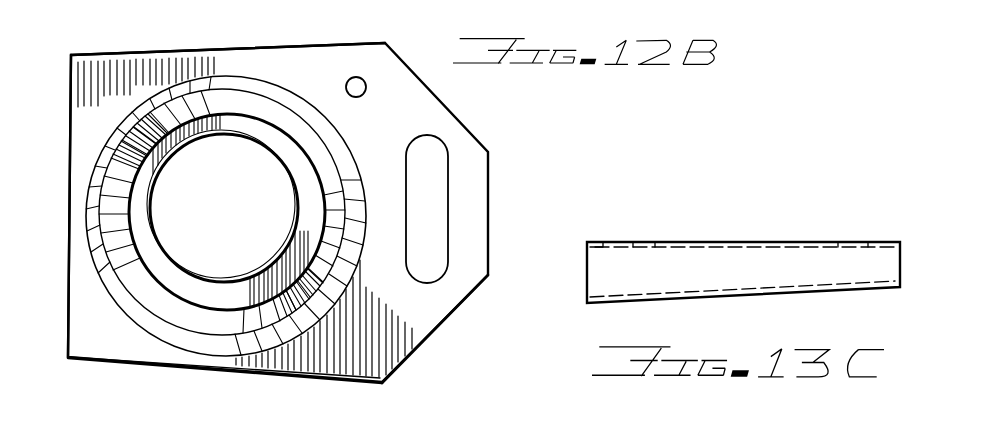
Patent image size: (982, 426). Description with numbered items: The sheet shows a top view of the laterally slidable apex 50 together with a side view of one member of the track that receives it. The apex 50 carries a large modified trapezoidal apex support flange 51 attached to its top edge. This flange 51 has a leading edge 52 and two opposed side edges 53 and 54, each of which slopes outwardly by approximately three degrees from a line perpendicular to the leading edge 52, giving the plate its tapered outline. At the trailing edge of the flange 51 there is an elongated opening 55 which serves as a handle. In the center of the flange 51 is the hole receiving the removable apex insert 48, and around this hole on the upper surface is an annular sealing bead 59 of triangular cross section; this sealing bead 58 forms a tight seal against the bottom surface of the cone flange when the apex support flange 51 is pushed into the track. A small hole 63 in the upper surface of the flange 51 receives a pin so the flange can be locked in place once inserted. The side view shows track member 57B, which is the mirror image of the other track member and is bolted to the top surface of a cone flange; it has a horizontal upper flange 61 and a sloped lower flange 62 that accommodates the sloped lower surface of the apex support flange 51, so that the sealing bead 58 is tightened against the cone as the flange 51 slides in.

In FIG. 12B, the laterally slidable apex 50 is at (158, 373).
In FIG. 12B, the apex support flange 51 is at (340, 354).
In FIG. 12B, the leading edge 52 is at (69, 230).
In FIG. 12B, the side edge 53 is at (196, 370).
In FIG. 12B, the side edge 54 is at (271, 47).
In FIG. 12B, the elongated opening 55 is at (427, 137).
In FIG. 12B, the hole 63 is at (367, 82).
In FIG. 12B, the removable apex insert 48 is at (191, 283).
In FIG. 12B, the sealing bead 58 is at (150, 314).
In FIG. 12B, the annular sealing bead 59 is at (158, 278).
In FIG. 13C, the track member 57B is at (892, 268).
In FIG. 13C, the upper flange 61 is at (655, 240).
In FIG. 13C, the lower flange 62 is at (603, 240).